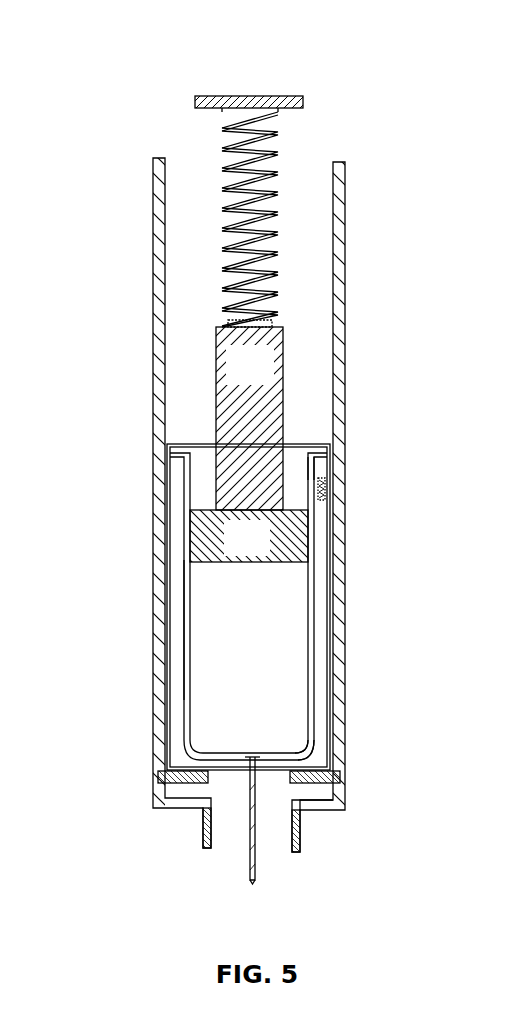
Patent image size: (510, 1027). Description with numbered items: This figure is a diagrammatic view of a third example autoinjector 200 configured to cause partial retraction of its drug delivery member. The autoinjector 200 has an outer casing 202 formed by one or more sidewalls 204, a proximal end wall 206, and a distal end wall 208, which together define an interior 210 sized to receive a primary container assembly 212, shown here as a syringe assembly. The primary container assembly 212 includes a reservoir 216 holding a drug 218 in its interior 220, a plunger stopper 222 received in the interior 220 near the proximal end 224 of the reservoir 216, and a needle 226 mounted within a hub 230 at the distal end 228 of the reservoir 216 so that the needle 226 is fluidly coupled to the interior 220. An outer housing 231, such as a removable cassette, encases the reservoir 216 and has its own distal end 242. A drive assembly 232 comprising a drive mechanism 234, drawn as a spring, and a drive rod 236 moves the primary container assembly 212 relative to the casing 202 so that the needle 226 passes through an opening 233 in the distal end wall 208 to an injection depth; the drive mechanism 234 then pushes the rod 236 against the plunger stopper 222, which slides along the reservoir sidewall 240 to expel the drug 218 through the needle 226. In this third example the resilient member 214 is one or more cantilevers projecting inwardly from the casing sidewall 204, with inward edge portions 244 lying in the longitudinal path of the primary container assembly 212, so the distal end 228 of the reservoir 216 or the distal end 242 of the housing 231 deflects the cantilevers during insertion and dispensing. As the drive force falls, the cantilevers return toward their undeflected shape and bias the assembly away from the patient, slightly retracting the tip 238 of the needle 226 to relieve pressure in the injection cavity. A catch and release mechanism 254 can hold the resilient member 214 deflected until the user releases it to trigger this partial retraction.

The autoinjector 200 is at (404, 48).
The outer casing 202 is at (153, 258).
The sidewall 204 is at (345, 400).
The proximal end wall 206 is at (245, 96).
The distal end wall 208 is at (305, 812).
The interior 210 is at (183, 371).
The primary container assembly 212 is at (316, 544).
The resilient member 214 is at (187, 768).
The reservoir 216 is at (317, 618).
The drug 218 is at (232, 702).
The reservoir interior 220 is at (214, 641).
The plunger stopper 222 is at (203, 540).
The proximal end 224 is at (183, 488).
The needle 226 is at (256, 846).
The distal end 228 is at (302, 745).
The hub 230 is at (250, 765).
The outer housing 231 is at (168, 668).
The drive assembly 232 is at (300, 226).
The opening 233 is at (212, 837).
The drive mechanism 234 is at (280, 160).
The drive rod 236 is at (285, 362).
The tip 238 is at (256, 876).
The sidewall 240 is at (168, 643).
The distal end 242 is at (322, 756).
The inward edge portions 244 is at (333, 798).
The catch and release mechanism 254 is at (325, 480).